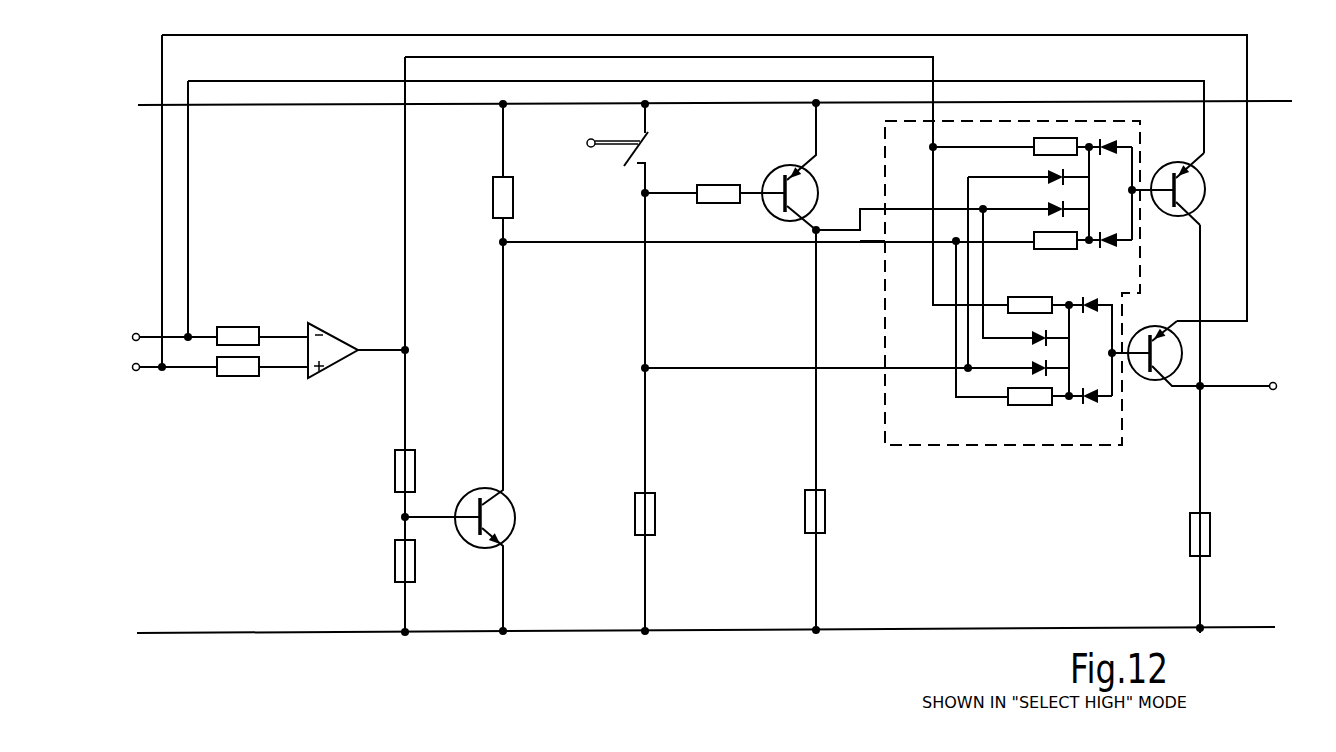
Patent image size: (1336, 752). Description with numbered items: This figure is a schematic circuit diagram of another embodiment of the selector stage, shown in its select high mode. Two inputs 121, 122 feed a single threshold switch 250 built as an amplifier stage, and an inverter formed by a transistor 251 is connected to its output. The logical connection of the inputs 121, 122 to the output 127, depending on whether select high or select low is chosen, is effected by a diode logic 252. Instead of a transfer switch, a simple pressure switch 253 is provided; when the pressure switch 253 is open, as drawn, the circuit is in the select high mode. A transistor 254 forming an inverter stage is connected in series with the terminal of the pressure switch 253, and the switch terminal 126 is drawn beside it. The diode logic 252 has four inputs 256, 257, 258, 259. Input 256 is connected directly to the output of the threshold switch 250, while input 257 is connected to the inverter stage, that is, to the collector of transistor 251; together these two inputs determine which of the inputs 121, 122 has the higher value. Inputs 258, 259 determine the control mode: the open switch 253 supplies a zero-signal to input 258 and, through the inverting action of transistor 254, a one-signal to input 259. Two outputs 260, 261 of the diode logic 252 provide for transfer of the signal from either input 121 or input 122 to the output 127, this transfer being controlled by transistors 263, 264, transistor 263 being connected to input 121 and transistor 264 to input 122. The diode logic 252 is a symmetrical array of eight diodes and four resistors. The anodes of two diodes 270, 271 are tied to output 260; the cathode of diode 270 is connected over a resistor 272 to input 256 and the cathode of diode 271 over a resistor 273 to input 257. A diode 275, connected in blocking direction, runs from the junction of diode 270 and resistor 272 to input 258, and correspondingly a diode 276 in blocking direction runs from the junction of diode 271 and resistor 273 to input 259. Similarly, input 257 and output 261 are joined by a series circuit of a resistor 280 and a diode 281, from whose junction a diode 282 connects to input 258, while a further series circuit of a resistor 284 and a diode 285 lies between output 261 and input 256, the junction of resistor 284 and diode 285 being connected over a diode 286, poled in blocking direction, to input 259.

The input 121 is at (137, 333).
The input 122 is at (136, 371).
The mode selection switch terminal 126 is at (589, 148).
The output 127 is at (1265, 393).
The threshold switch 250 is at (327, 368).
The transistor 251 is at (463, 537).
The diode logic 252 is at (953, 446).
The pressure switch 253 is at (650, 136).
The transistor 254 is at (766, 199).
The input 256 is at (930, 120).
The input 257 is at (884, 243).
The input 258 is at (884, 370).
The input 259 is at (878, 209).
The output 260 is at (1153, 178).
The output 261 is at (1122, 357).
The transistor 263 is at (1196, 185).
The transistor 264 is at (1172, 350).
The diode 270 is at (1112, 158).
The diode 271 is at (1118, 250).
The resistor 272 is at (1040, 152).
The resistor 273 is at (1045, 250).
The diode 275 is at (1056, 182).
The diode 276 is at (1045, 204).
The resistor 280 is at (1020, 405).
The diode 281 is at (1086, 404).
The diode 282 is at (1040, 362).
The resistor 284 is at (1014, 284).
The diode 285 is at (1090, 312).
The diode 286 is at (1034, 345).